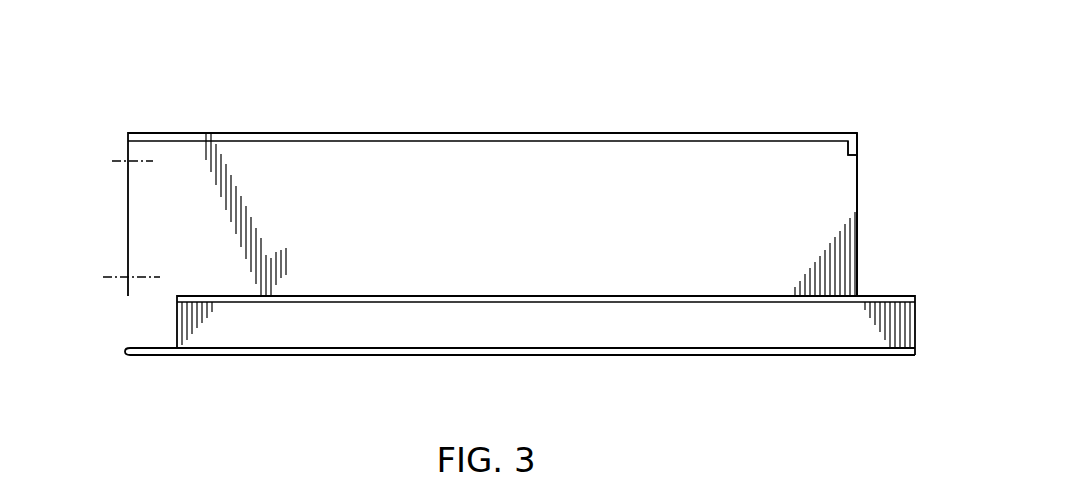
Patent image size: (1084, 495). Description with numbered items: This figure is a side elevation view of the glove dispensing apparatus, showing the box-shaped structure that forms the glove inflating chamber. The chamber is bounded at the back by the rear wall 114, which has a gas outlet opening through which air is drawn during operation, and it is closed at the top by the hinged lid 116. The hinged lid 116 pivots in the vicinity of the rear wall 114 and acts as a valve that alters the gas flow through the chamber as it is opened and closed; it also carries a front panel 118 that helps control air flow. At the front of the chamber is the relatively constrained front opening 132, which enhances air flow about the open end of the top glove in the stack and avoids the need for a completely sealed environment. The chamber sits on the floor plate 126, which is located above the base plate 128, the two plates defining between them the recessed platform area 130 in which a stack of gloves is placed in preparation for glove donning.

The rear wall 114 is at (127, 210).
The hinged lid 116 is at (703, 134).
The front panel 118 is at (857, 147).
The front opening 132 is at (860, 202).
The floor plate 126 is at (878, 297).
The base plate 128 is at (875, 353).
The recessed platform area 130 is at (490, 312).